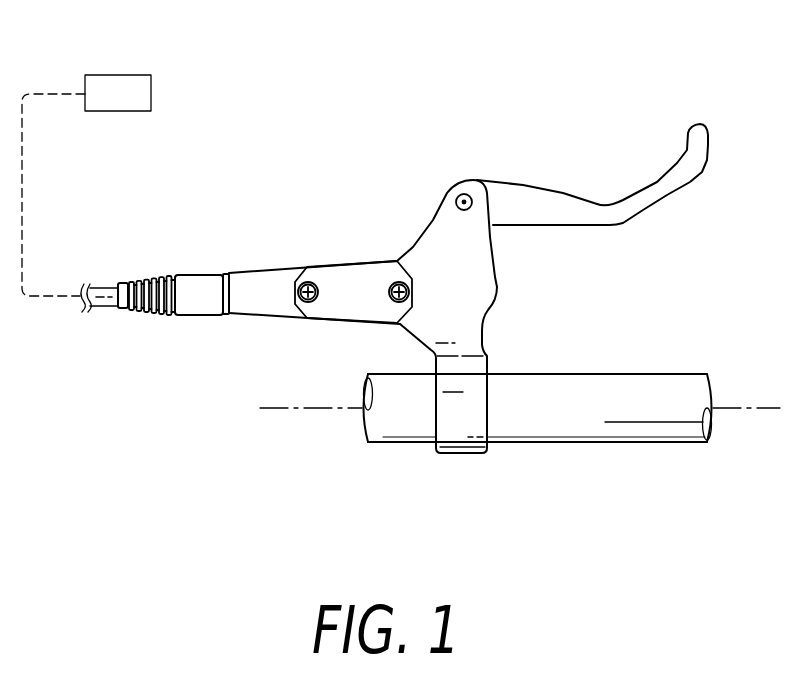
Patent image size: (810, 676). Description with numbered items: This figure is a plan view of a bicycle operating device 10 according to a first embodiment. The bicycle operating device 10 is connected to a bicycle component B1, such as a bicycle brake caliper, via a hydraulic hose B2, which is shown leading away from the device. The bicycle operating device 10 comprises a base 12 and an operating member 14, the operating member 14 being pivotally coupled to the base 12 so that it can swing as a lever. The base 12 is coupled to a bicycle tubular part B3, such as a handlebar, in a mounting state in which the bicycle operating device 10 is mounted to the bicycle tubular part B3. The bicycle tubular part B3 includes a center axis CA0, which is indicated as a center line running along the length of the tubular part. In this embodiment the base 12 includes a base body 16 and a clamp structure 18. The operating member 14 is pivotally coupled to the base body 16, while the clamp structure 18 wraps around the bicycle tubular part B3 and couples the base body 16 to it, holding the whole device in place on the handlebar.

The bicycle operating device 10 is at (487, 102).
The base 12 is at (508, 316).
The operating member 14 is at (500, 178).
The base body 16 is at (498, 270).
The clamp structure 18 is at (589, 275).
The bicycle component B1 is at (128, 107).
The hydraulic hose B2 is at (22, 200).
The bicycle tubular part B3 is at (631, 444).
The center axis CA0 is at (275, 410).